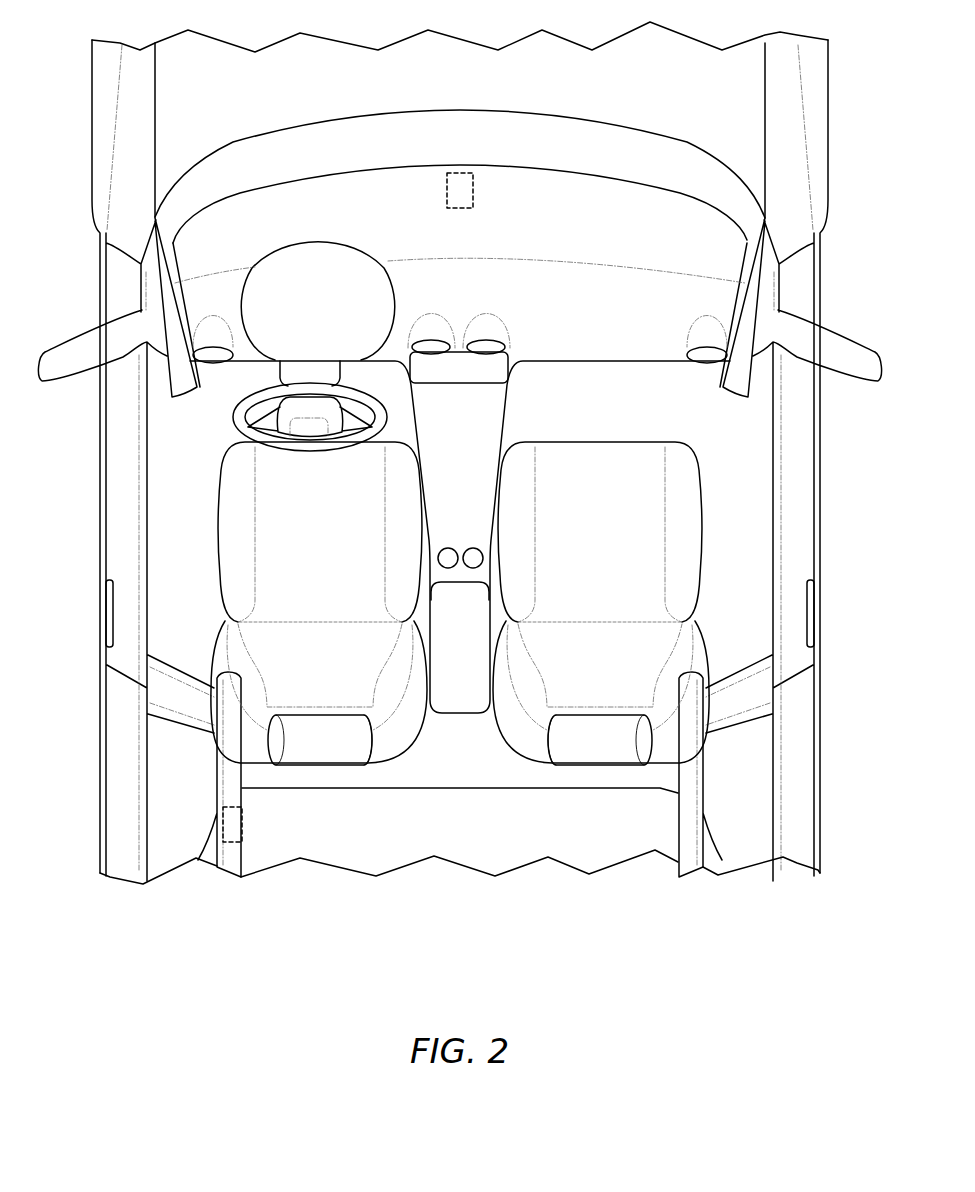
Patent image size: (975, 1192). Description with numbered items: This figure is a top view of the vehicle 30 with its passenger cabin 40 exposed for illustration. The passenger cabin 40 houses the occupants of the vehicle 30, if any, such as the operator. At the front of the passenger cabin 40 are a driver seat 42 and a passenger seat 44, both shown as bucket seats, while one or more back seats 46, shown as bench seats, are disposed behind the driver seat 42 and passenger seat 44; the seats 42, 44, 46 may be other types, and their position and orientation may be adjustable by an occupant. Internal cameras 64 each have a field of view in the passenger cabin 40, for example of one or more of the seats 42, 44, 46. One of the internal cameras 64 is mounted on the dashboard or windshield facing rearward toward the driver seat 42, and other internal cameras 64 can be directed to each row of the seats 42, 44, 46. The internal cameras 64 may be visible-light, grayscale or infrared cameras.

The vehicle 30 is at (80, 102).
The passenger cabin 40 is at (730, 509).
The driver seat 42 is at (223, 512).
The passenger seat 44 is at (588, 441).
The back seats 46 is at (455, 787).
The internal cameras 64 is at (473, 193).